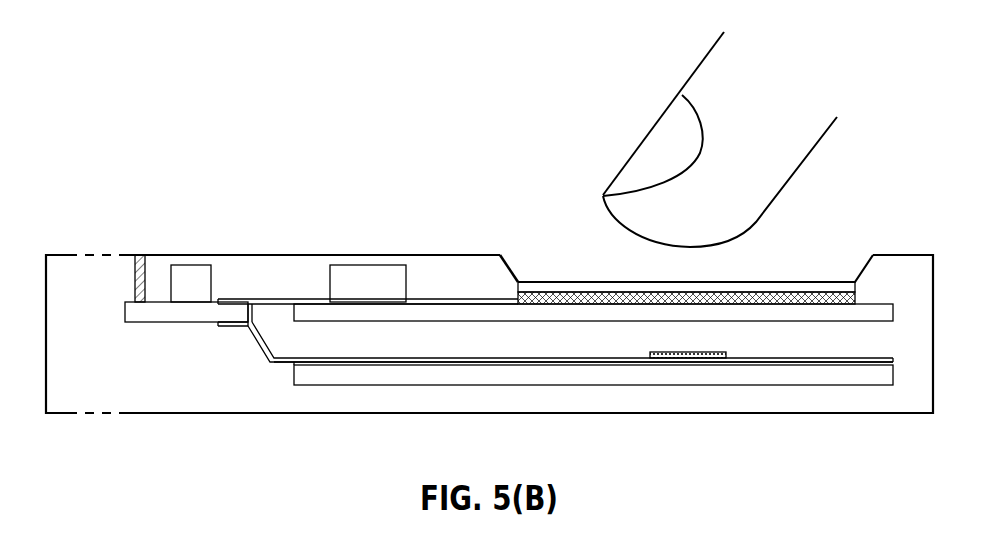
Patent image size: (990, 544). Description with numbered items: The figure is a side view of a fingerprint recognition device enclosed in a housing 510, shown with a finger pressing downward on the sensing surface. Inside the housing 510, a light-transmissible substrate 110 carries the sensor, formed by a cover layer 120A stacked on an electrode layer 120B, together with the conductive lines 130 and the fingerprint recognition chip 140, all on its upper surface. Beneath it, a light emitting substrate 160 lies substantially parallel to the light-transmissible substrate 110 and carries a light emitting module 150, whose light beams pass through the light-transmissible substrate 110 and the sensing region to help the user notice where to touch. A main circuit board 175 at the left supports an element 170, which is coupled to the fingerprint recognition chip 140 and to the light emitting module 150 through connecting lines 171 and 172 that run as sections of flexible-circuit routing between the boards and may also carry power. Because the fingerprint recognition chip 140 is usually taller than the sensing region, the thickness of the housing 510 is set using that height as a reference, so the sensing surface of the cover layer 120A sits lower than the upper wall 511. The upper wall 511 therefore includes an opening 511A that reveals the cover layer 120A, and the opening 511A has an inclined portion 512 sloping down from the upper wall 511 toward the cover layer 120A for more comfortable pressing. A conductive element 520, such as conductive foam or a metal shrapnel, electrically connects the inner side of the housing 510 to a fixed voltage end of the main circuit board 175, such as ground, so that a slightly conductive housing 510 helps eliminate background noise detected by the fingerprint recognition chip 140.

The light-transmissible substrate 110 is at (330, 322).
The cover layer 120A is at (856, 287).
The electrode layer 120B is at (856, 298).
The conductive lines 130 is at (440, 298).
The fingerprint recognition chip 140 is at (380, 290).
The light emitting module 150 is at (726, 358).
The light emitting substrate 160 is at (874, 364).
The control component on main circuit board 170 is at (203, 290).
The connecting line 171 is at (266, 298).
The connecting line 172 is at (420, 361).
The main circuit board 175 is at (182, 324).
The housing 510 is at (934, 338).
The upper wall 511 is at (420, 256).
The opening 511A is at (809, 264).
The inclined portion 512 is at (512, 272).
The conductive element 520 is at (134, 276).